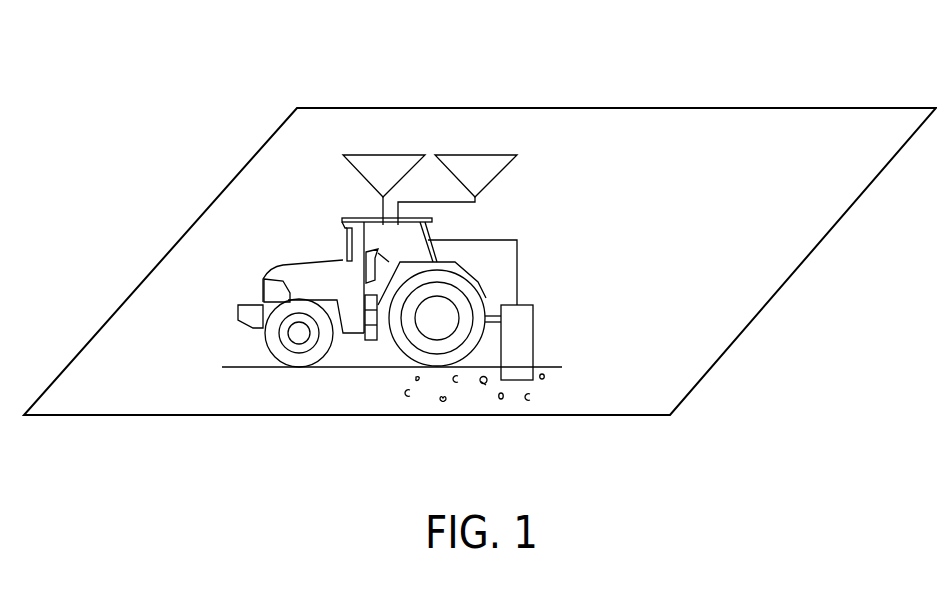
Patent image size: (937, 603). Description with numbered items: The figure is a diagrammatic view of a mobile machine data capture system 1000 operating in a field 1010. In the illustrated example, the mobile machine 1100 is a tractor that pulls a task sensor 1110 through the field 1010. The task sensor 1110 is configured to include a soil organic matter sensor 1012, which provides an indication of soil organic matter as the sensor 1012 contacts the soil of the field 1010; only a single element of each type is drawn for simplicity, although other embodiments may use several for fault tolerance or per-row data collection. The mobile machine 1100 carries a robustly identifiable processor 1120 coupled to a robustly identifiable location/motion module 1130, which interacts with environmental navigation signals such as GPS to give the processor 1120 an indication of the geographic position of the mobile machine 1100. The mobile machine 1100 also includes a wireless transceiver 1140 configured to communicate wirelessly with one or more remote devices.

The mobile machine data capture system 1000 is at (299, 84).
The field 1010 is at (352, 132).
The soil organic matter (SOM) sensor 1012 is at (533, 403).
The mobile machine 1100 is at (362, 292).
The task sensor 1110 is at (534, 318).
The processor 1120 is at (440, 265).
The location/motion module 1130 is at (384, 190).
The wireless transceiver 1140 is at (457, 190).